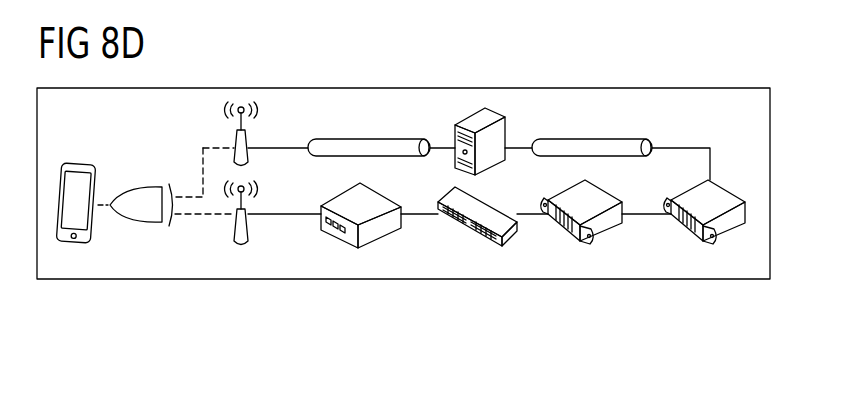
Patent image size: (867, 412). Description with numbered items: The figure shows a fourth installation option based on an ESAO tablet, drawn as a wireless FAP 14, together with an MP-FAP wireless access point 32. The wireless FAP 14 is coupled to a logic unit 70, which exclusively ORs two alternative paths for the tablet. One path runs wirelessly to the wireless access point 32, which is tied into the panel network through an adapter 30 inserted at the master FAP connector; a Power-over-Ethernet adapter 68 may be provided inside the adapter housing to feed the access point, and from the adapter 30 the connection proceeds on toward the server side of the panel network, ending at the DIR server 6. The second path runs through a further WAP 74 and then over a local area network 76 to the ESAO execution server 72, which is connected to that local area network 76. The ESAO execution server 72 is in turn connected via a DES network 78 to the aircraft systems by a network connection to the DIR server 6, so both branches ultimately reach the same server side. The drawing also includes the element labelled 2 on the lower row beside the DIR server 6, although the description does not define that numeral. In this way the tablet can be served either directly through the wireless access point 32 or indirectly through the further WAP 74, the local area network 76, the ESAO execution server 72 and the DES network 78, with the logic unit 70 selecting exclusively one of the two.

The wireless FAP 14 is at (72, 244).
The logic unit 70 is at (150, 222).
The wireless access point 32 is at (241, 246).
The further WAP 74 is at (241, 106).
The local area network 76 is at (368, 139).
The ESAO execution server 72 is at (470, 108).
The DES network 78 is at (592, 139).
The Power-over-Ethernet adapter 68 is at (380, 237).
The adapter 30 is at (510, 243).
The automation device 2 is at (610, 238).
The DIR server 6 is at (735, 238).